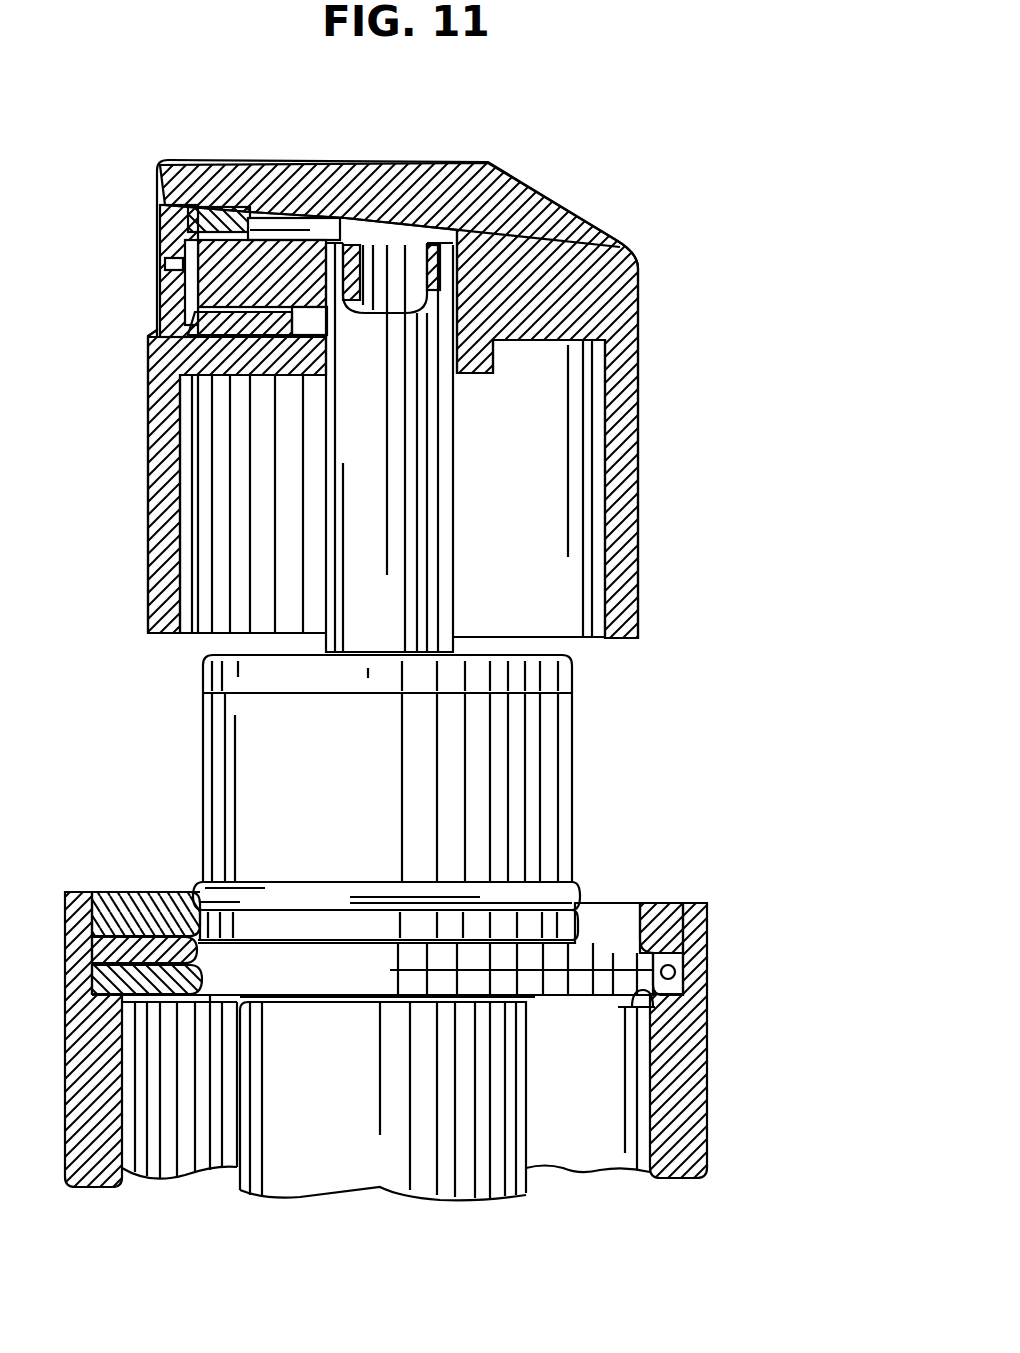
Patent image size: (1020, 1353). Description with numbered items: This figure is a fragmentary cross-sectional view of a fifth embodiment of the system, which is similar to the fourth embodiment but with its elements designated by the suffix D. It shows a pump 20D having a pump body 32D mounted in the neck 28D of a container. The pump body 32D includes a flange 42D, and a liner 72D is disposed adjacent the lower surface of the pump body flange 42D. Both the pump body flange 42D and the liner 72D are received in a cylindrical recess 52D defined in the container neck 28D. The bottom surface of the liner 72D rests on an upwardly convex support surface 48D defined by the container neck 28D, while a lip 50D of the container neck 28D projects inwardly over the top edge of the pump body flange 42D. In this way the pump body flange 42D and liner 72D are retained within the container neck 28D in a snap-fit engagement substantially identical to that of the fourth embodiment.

The pump 20D is at (632, 236).
The pump body 32D is at (582, 722).
The pump body flange 42D is at (605, 953).
The lip 50D is at (647, 903).
The cylindrical recess 52D is at (688, 988).
The upwardly convex support surface 48D is at (683, 1035).
The liner 72D is at (583, 997).
The container neck 28D is at (707, 1147).